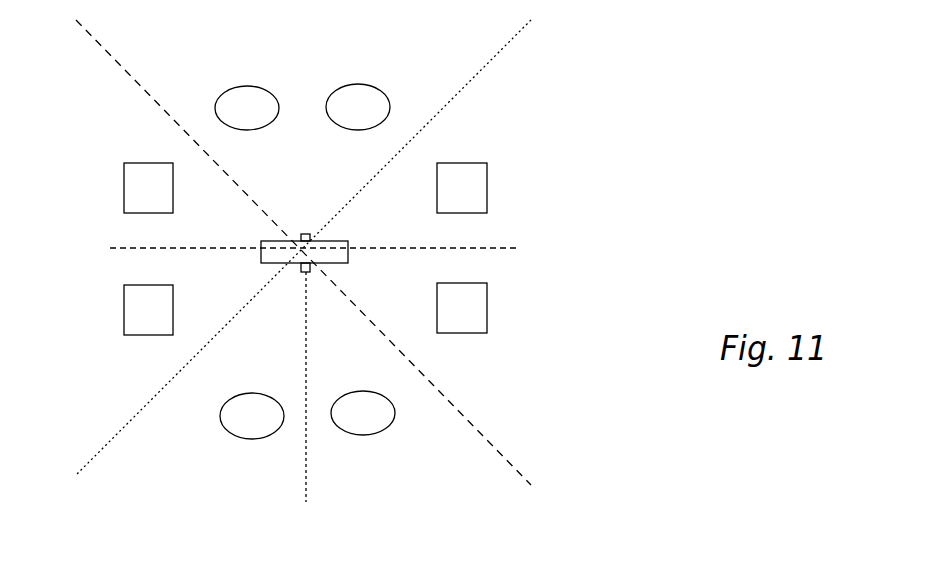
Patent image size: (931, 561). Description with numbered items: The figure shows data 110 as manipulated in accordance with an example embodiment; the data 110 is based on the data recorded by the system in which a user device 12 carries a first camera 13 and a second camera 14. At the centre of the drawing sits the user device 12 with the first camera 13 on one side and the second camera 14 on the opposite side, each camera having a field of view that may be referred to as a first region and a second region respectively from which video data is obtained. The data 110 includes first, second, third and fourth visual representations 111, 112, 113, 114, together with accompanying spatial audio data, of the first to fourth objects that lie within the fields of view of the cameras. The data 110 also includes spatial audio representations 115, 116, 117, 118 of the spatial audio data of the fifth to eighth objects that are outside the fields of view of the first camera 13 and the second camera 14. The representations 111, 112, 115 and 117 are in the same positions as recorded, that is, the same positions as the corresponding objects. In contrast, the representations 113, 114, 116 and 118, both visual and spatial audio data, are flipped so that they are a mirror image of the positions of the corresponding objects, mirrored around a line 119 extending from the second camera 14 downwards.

The data 110 is at (612, 452).
The first visual representation 111 is at (252, 85).
The second visual representation 112 is at (378, 83).
The third visual representation 113 is at (378, 438).
The fourth visual representation 114 is at (253, 442).
The spatial audio representation 115 is at (113, 180).
The spatial audio representation 116 is at (505, 323).
The spatial audio representation 117 is at (497, 170).
The spatial audio representation 118 is at (120, 323).
The line 119 is at (308, 372).
The user device 12 is at (348, 243).
The first camera 13 is at (306, 234).
The second camera 14 is at (300, 268).